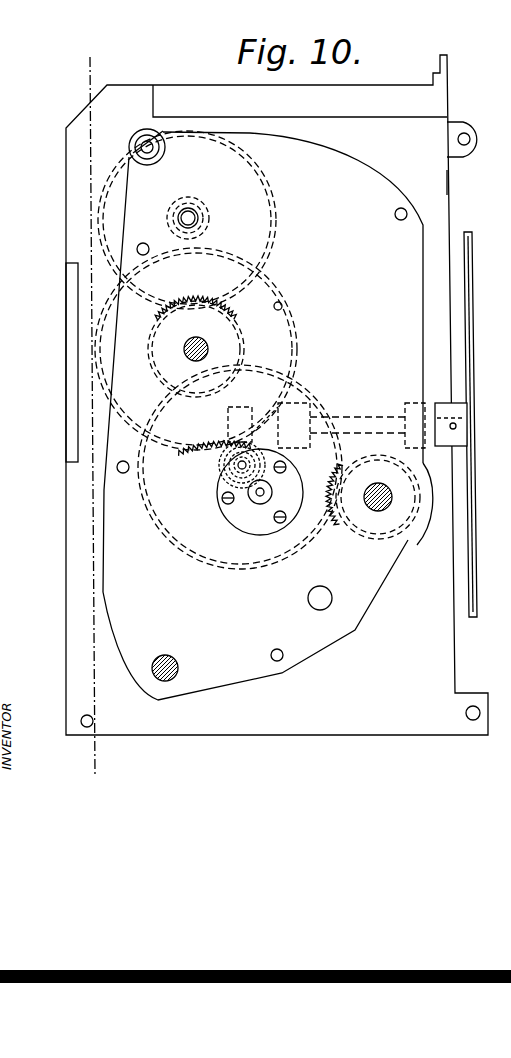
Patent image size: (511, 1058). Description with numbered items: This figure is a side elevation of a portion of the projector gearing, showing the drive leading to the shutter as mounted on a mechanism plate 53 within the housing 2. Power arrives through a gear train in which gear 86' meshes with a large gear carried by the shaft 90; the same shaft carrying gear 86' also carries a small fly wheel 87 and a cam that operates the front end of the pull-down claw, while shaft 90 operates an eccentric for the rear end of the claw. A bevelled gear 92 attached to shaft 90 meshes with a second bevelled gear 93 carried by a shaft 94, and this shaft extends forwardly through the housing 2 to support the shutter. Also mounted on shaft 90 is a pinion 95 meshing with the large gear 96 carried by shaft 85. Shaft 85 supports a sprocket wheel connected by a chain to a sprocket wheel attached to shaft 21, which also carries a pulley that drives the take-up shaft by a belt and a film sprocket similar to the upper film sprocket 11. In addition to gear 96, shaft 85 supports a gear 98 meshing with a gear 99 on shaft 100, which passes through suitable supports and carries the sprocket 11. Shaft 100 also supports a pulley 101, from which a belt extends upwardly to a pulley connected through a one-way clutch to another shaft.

The housing 2 is at (433, 182).
The upper film sprocket 11 is at (28, 62).
The shaft 21 is at (167, 682).
The plate 53 is at (277, 395).
The shaft 85 is at (208, 334).
The gear 86' is at (365, 512).
The small fly wheel 87 is at (420, 516).
The shaft 90 is at (222, 474).
The bevelled gear 92 is at (218, 472).
The second bevelled gear 93 is at (250, 404).
The shaft 94 is at (383, 406).
The pinion 95 is at (470, 368).
The large gear 96 is at (278, 288).
The gear 98 is at (244, 345).
The gear 99 is at (272, 190).
The shaft 100 is at (192, 208).
The pulley 101 is at (216, 211).